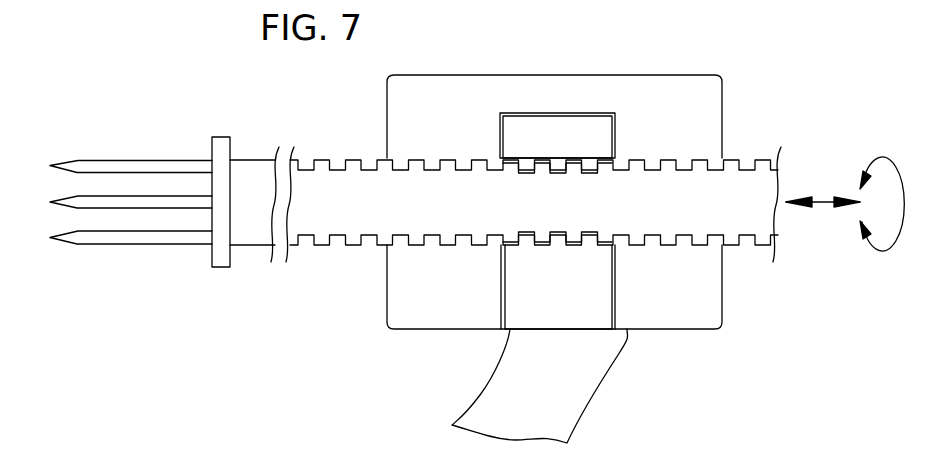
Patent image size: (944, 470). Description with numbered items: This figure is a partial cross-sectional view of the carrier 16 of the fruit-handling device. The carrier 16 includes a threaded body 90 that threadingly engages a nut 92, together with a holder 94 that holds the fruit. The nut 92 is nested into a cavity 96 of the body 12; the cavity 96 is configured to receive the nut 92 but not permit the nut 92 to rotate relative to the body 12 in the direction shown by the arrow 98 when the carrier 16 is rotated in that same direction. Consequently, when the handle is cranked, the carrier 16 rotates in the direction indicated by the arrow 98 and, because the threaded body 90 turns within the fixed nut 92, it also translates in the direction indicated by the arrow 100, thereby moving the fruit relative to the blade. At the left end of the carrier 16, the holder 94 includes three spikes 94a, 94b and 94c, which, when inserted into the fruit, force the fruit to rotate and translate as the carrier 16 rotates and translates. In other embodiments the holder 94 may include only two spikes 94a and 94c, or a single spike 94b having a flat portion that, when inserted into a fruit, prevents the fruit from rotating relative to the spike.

The body 12 is at (672, 75).
The carrier 16 is at (333, 138).
The threaded body 90 is at (323, 246).
The nut 92 is at (560, 330).
The holder 94 is at (131, 179).
The spike 94a is at (108, 160).
The spike 94b is at (104, 195).
The spike 94c is at (92, 244).
The cavity 96 is at (560, 113).
The arrow 98 is at (879, 157).
The arrow 100 is at (822, 203).